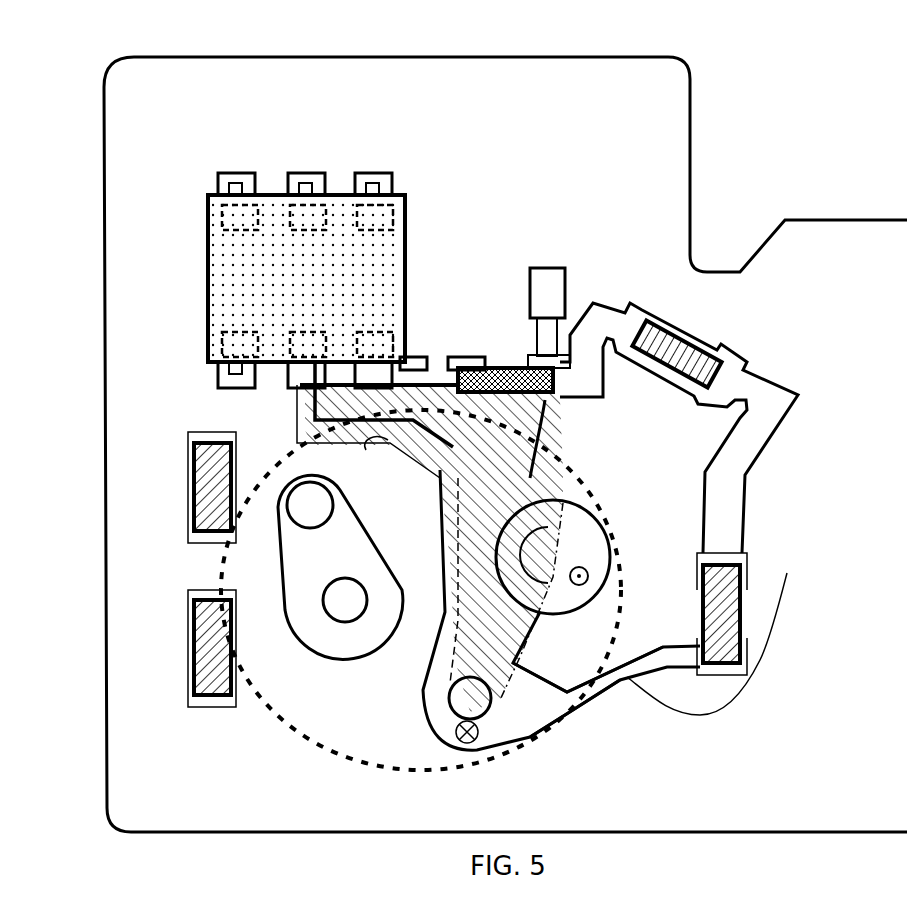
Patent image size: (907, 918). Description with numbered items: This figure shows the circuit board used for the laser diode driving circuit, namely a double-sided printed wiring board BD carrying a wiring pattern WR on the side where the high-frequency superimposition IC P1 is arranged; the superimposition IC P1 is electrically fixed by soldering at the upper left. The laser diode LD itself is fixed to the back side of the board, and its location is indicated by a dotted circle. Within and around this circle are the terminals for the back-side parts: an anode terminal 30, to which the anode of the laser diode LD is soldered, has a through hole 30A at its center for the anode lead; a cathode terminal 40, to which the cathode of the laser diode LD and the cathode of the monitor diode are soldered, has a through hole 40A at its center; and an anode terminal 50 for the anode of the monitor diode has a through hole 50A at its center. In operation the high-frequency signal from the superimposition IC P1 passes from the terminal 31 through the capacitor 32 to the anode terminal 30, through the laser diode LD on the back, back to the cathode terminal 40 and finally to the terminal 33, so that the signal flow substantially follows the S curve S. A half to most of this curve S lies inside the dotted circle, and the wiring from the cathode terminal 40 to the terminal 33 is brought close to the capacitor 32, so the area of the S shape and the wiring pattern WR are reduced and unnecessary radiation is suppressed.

The double-sided printed wiring board BD is at (682, 102).
The high-frequency superimposition IC P1 is at (208, 290).
The terminal 31 is at (372, 352).
The terminal 33 is at (300, 340).
The capacitor 32 is at (500, 368).
The S curve S is at (548, 522).
The anode terminal 30 is at (563, 597).
The through hole 30A is at (558, 553).
The cathode terminal 40 is at (508, 712).
The through hole 40A is at (462, 745).
The anode terminal 50 is at (318, 640).
The through hole 50A is at (356, 622).
The laser diode LD is at (228, 573).
The wiring pattern WR is at (720, 503).